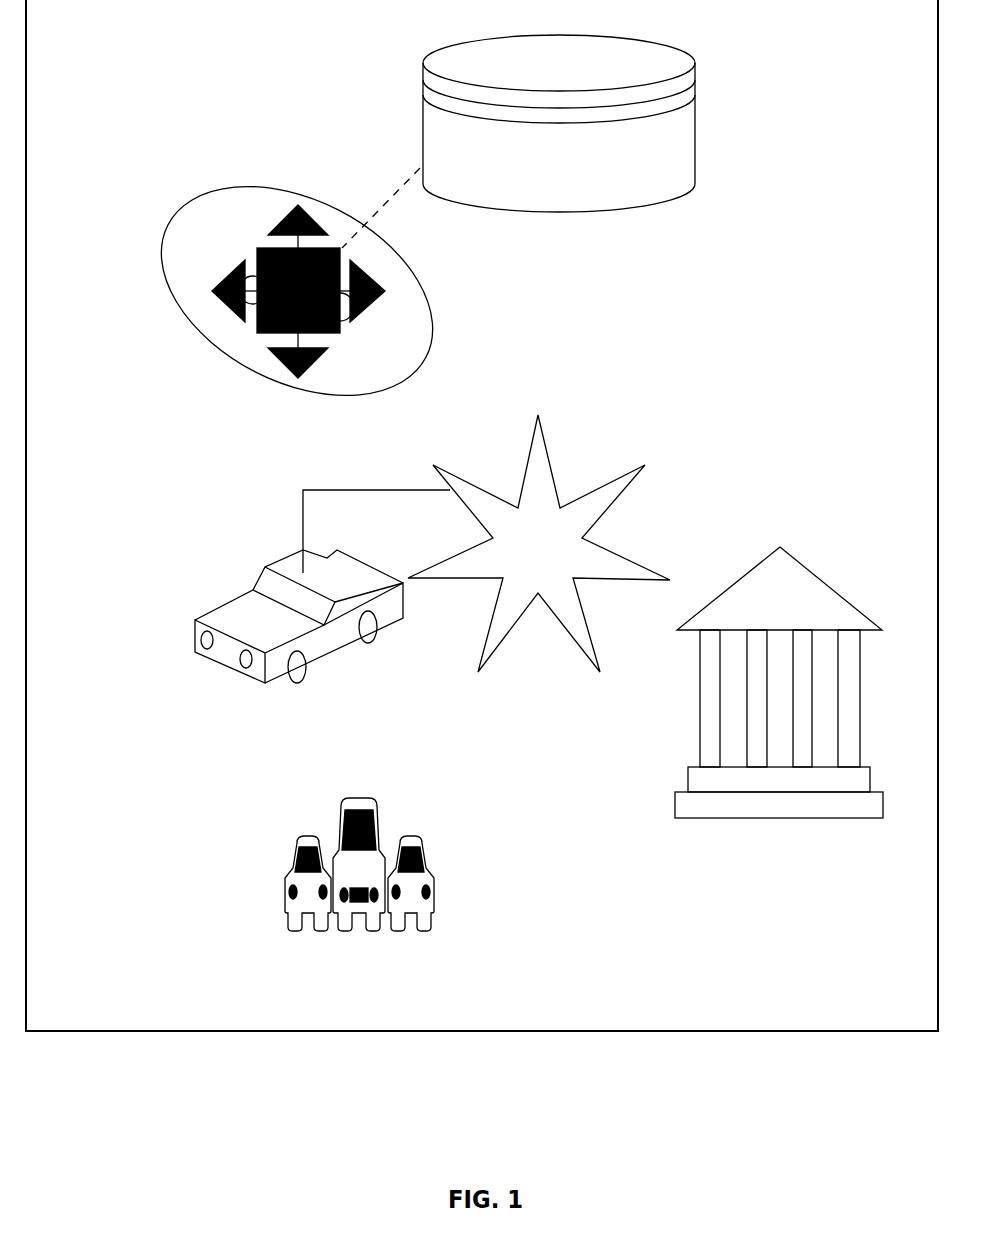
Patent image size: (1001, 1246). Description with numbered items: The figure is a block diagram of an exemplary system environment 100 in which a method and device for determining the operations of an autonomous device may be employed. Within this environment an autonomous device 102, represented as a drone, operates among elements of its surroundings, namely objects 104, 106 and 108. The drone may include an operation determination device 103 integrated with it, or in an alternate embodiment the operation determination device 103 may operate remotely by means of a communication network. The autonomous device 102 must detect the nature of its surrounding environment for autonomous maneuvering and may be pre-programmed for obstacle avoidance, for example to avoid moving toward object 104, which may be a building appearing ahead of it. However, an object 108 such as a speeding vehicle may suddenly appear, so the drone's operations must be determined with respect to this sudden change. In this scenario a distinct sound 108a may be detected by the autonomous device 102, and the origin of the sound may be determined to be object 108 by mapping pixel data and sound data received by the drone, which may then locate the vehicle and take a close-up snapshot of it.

The system environment 100 is at (618, 1022).
The autonomous device 102 is at (296, 300).
The operation determination device 103 is at (518, 141).
The object 104 is at (825, 912).
The object 106 is at (418, 964).
The object 108 is at (362, 716).
The sound 108a is at (539, 543).